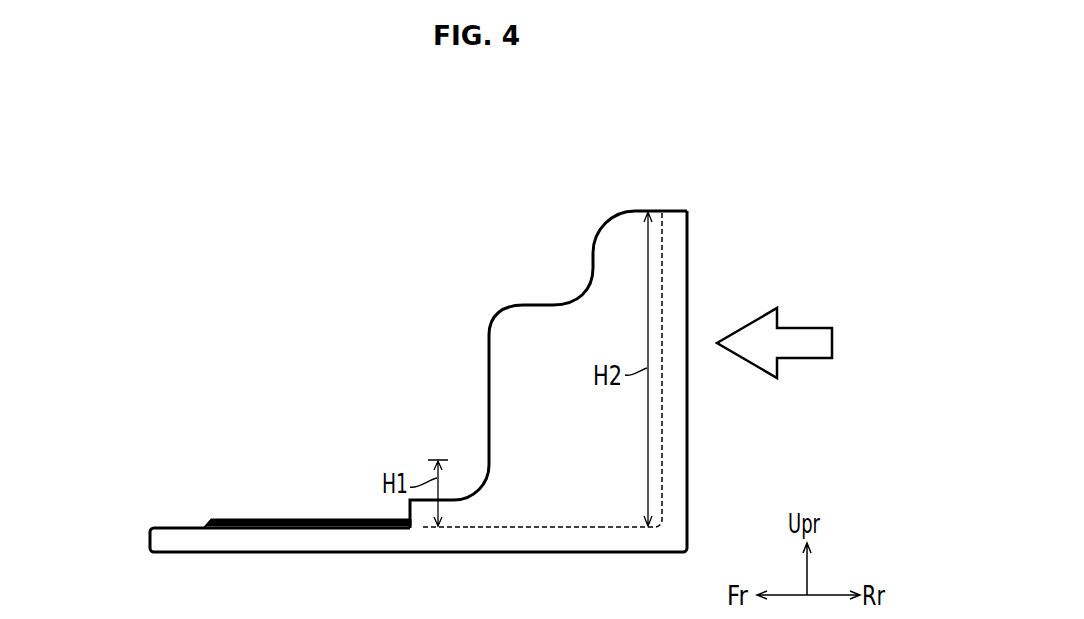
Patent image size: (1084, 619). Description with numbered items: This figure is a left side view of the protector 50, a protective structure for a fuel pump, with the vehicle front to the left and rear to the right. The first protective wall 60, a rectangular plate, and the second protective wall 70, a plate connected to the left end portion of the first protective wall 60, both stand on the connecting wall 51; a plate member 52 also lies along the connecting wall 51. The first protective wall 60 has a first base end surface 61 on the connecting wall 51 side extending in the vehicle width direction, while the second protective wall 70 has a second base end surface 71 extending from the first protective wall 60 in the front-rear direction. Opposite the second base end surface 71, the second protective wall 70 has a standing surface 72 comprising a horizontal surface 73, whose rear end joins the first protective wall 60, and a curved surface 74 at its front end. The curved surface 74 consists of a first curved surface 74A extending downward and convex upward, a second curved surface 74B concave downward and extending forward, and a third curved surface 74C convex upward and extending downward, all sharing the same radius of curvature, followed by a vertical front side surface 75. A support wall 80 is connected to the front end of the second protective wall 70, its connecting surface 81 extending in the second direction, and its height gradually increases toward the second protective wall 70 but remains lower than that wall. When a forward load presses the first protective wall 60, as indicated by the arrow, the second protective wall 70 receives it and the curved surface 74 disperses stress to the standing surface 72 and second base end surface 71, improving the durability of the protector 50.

The protector 50 is at (285, 271).
The connecting wall 51 is at (170, 527).
The plate member 52 is at (231, 519).
The first protective wall 60 is at (688, 237).
The first base end surface 61 is at (662, 527).
The second protective wall 70 is at (630, 338).
The second base end surface 71 is at (557, 528).
The standing surface 72 is at (427, 162).
The horizontal surface 73 is at (635, 210).
The curved surface 74 is at (590, 195).
The first curved surface 74A is at (598, 225).
The second curved surface 74B is at (585, 285).
The third curved surface 74C is at (498, 310).
The front side surface 75 is at (488, 390).
The support wall 80 is at (417, 518).
The connecting surface 81 is at (418, 528).